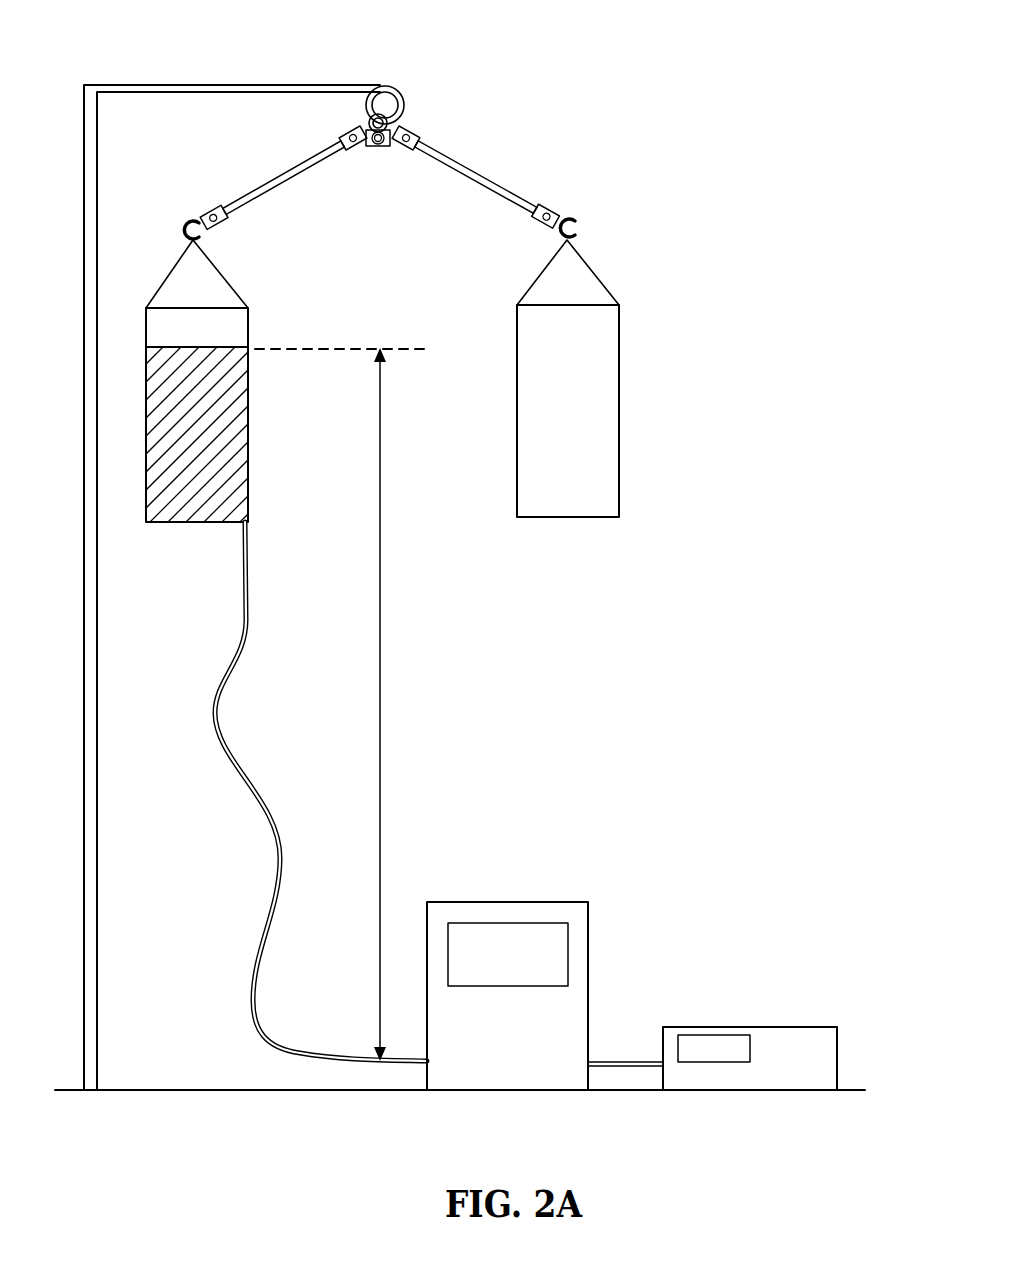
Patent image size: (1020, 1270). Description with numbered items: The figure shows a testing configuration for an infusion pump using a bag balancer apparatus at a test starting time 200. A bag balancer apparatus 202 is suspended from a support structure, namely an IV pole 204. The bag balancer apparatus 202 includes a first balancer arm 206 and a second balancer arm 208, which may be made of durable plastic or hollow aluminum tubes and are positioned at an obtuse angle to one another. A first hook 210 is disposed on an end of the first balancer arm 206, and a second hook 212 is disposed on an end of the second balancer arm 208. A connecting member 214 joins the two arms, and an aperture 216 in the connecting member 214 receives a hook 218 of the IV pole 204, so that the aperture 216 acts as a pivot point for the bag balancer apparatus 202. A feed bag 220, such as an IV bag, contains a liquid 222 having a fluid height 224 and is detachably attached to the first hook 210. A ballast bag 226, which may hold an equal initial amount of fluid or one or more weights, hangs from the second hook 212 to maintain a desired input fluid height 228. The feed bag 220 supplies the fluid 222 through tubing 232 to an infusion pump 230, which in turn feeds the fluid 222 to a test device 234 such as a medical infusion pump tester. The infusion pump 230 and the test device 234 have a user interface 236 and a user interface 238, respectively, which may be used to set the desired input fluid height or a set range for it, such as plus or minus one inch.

The test starting time 200 is at (816, 100).
The bag balancer apparatus 202 is at (422, 122).
The IV pole 204 is at (175, 85).
The first balancer arm 206 is at (300, 165).
The second balancer arm 208 is at (490, 170).
The first hook 210 is at (215, 210).
The second hook 212 is at (565, 210).
The connecting member 214 is at (383, 150).
The aperture 216 is at (364, 118).
The hook 218 is at (384, 86).
The feed bag 220 is at (262, 330).
The liquid 222 is at (197, 505).
The fluid height 224 is at (390, 347).
The ballast bag 226 is at (632, 326).
The input fluid height 228 is at (381, 708).
The infusion pump 230 is at (567, 902).
The tubing 232 is at (280, 890).
The test device 234 is at (805, 1027).
The user interface 236 is at (480, 923).
The user interface 238 is at (712, 1035).